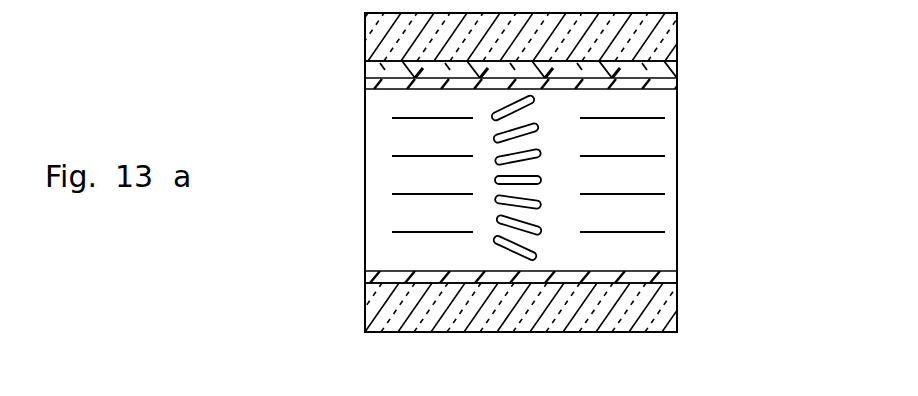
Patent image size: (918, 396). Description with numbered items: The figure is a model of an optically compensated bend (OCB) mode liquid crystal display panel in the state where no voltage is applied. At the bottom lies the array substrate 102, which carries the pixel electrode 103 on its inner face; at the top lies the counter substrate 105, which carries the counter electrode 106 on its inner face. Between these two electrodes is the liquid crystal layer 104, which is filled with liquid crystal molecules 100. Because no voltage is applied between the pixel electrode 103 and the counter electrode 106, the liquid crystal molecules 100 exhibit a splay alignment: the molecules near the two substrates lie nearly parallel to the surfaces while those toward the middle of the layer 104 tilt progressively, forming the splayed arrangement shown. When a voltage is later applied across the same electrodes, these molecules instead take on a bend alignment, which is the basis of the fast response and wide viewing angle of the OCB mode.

The liquid crystal molecules 100 is at (547, 143).
The array substrate 102 is at (345, 273).
The pixel electrode 103 is at (660, 271).
The liquid crystal layer 104 is at (342, 90).
The counter substrate 105 is at (342, 14).
The counter electrode 106 is at (677, 76).